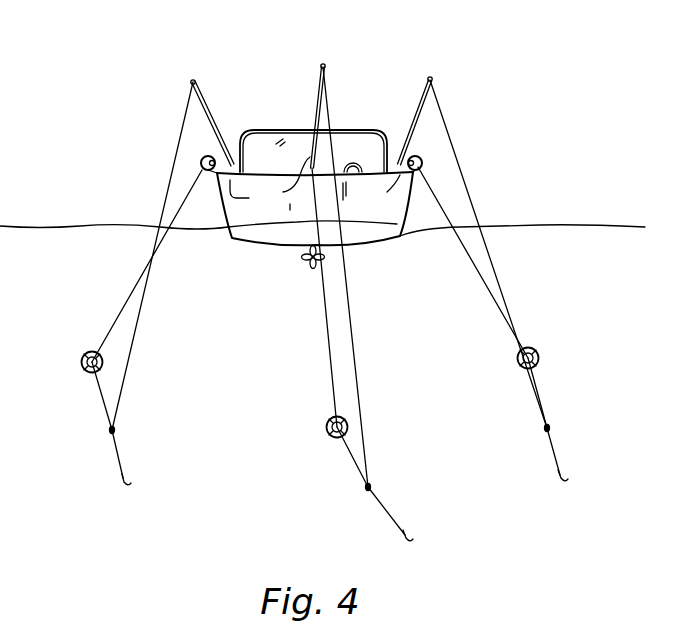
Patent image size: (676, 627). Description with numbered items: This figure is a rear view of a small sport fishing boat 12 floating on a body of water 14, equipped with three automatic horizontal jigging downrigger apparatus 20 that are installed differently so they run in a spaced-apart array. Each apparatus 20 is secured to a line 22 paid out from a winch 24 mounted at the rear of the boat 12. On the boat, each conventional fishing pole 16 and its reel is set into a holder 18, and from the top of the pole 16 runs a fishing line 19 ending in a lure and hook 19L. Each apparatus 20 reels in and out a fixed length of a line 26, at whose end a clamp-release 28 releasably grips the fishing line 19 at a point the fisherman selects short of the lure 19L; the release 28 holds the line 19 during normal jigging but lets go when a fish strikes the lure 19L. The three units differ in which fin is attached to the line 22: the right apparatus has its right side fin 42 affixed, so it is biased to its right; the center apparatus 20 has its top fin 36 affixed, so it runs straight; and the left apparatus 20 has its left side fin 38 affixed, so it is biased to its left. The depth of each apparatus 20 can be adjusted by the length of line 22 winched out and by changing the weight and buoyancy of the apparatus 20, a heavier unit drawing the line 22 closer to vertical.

The sport fishing boat 12 is at (275, 128).
The body of water 14 is at (555, 225).
The fishing pole 16 is at (205, 95).
The holder 18 is at (231, 160).
The fishing line 19 is at (470, 203).
The lure and hook 19L is at (128, 480).
The automatic horizontal jigging downrigger apparatus 20 is at (82, 377).
The line 22 is at (125, 297).
The winch 24 is at (315, 183).
The line 26 is at (100, 405).
The clamp-release 28 is at (113, 430).
The top fin 36 is at (330, 415).
The left side fin 38 is at (92, 348).
The right side fin 42 is at (532, 348).